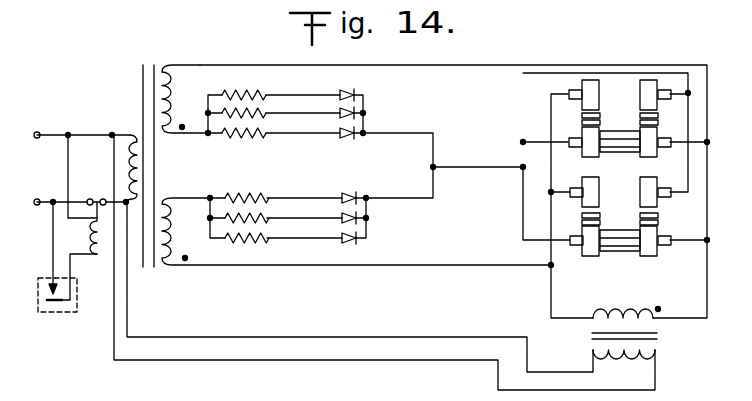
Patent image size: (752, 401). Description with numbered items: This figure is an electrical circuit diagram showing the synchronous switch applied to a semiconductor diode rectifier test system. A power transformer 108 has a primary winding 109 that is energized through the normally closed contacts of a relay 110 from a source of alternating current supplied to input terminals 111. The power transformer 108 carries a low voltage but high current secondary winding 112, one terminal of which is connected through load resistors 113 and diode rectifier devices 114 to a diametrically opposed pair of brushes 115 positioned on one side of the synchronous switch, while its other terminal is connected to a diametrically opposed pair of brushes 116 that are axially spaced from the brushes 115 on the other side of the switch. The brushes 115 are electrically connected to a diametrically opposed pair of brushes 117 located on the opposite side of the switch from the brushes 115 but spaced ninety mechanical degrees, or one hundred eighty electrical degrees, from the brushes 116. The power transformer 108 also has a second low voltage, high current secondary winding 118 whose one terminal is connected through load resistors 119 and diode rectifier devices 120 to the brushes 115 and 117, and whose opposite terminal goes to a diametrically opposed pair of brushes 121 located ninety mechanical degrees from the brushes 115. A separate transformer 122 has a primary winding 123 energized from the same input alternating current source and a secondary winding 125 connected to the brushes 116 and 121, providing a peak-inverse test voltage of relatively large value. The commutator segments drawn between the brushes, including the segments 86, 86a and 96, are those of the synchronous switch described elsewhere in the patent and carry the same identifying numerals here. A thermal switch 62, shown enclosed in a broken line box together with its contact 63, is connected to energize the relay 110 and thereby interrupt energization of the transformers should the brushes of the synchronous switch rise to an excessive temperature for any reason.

The power transformer 108 is at (147, 65).
The primary winding 109 is at (128, 133).
The relay 110 is at (99, 257).
The input terminals 111 is at (37, 198).
The secondary winding 112 is at (174, 80).
The load resistors 113 is at (266, 112).
The diode rectifier devices 114 is at (345, 91).
The brushes 115 is at (576, 148).
The brushes 116 is at (666, 148).
The brushes 117 is at (660, 90).
The secondary winding 118 is at (185, 241).
The load resistors 119 is at (252, 193).
The diode rectifier devices 120 is at (348, 193).
The brushes 121 is at (575, 99).
The transformer 122 is at (658, 337).
The primary winding 123 is at (620, 357).
The secondary winding 125 is at (615, 309).
The thermal switch 62 is at (42, 312).
The relay contact 63 is at (62, 300).
The gas discharge tube 86 is at (647, 133).
The electrodes 86a is at (640, 93).
The tube envelope 96 is at (613, 153).